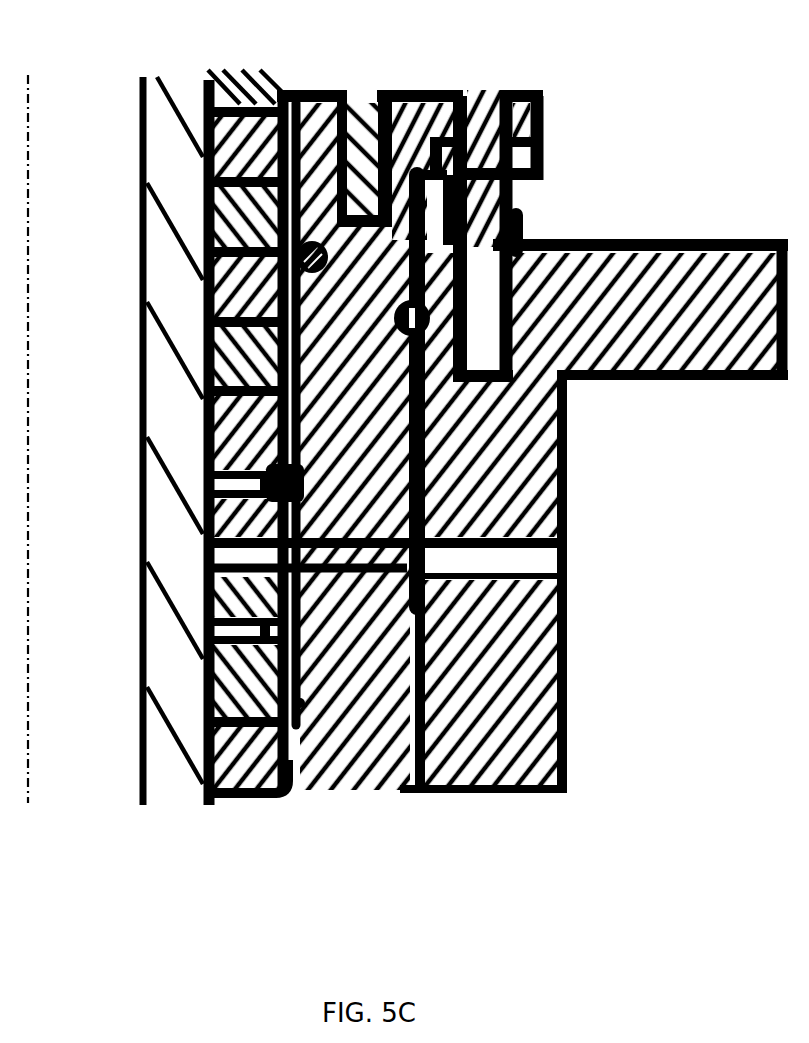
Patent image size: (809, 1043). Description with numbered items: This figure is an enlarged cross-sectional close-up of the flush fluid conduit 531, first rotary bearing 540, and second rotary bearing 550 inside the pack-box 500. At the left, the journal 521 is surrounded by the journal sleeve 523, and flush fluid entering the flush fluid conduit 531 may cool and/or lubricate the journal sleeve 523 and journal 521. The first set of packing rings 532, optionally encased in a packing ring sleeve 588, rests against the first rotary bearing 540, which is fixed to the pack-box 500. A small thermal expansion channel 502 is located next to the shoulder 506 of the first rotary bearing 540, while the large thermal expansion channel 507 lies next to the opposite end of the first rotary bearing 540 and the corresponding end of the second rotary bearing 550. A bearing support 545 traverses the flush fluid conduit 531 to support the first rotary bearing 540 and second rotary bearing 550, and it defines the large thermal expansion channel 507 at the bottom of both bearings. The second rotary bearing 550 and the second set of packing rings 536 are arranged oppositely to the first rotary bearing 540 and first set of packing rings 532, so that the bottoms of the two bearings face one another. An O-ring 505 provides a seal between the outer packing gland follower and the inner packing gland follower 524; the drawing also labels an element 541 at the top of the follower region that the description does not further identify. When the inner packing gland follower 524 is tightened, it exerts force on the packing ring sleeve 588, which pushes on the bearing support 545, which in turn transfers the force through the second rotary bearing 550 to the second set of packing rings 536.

The pack-box 500 is at (520, 750).
The small thermal expansion channel 502 is at (617, 240).
The O-ring 505 is at (523, 242).
The shoulder 506 is at (303, 410).
The large thermal expansion channel 507 is at (230, 482).
The journal 521 is at (77, 755).
The journal sleeve 523 is at (165, 782).
The inner packing gland follower 524 is at (335, 763).
The flush fluid conduit 531 is at (582, 562).
The first set of packing rings 532 is at (272, 103).
The second set of packing rings 536 is at (233, 800).
The first rotary bearing 540 is at (300, 387).
The clamp head 541 is at (483, 206).
The bearing support 545 is at (345, 538).
The second rotary bearing 550 is at (247, 693).
The packing ring sleeve 588 is at (313, 90).